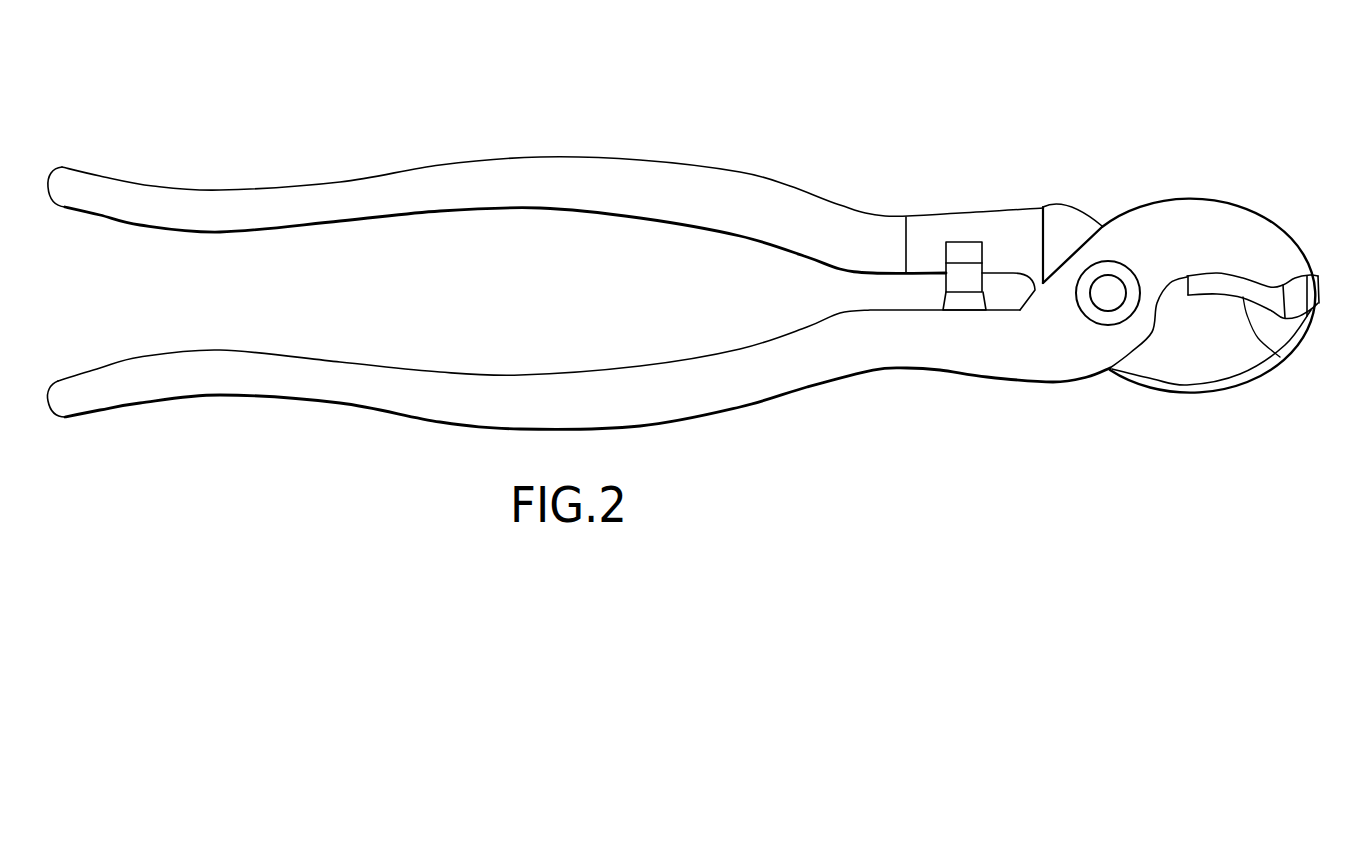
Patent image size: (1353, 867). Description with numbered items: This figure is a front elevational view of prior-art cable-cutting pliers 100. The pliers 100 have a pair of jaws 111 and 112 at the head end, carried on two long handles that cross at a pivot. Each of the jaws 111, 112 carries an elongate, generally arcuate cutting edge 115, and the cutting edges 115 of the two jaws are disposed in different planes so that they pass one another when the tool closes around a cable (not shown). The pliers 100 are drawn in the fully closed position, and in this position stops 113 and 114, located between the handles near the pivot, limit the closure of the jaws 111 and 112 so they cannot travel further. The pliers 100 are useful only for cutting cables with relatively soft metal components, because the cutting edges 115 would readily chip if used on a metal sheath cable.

The pliers 100 is at (741, 77).
The jaw 111 is at (1220, 205).
The jaw 112 is at (1212, 368).
The stop 113 is at (966, 291).
The stop 114 is at (955, 292).
The cutting edges 115 is at (1278, 355).